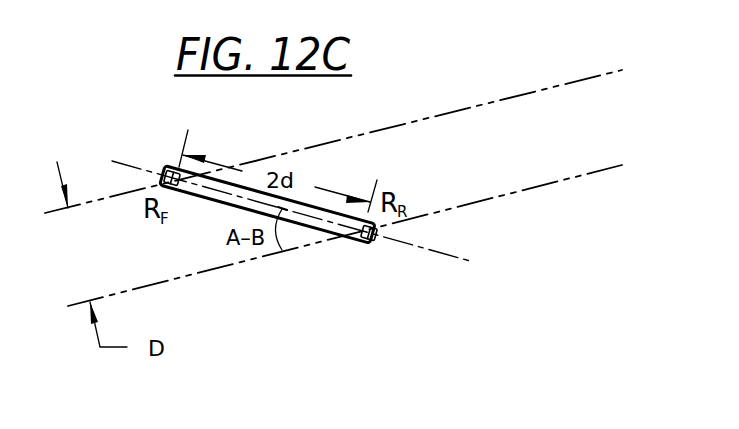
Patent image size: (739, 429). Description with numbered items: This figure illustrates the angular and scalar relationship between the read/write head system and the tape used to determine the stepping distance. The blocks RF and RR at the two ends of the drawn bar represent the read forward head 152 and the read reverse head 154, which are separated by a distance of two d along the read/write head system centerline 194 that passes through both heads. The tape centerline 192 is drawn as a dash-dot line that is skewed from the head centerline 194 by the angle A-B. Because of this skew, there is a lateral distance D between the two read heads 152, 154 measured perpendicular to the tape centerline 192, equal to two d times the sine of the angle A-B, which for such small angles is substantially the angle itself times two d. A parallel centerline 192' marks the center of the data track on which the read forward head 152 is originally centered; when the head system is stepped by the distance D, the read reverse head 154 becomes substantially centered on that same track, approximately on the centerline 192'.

The read forward head 152 is at (166, 170).
The read reverse head 154 is at (358, 248).
The tape centerline 192 is at (345, 228).
The centerline 192' is at (333, 135).
The read/write head system centerline 194 is at (449, 256).